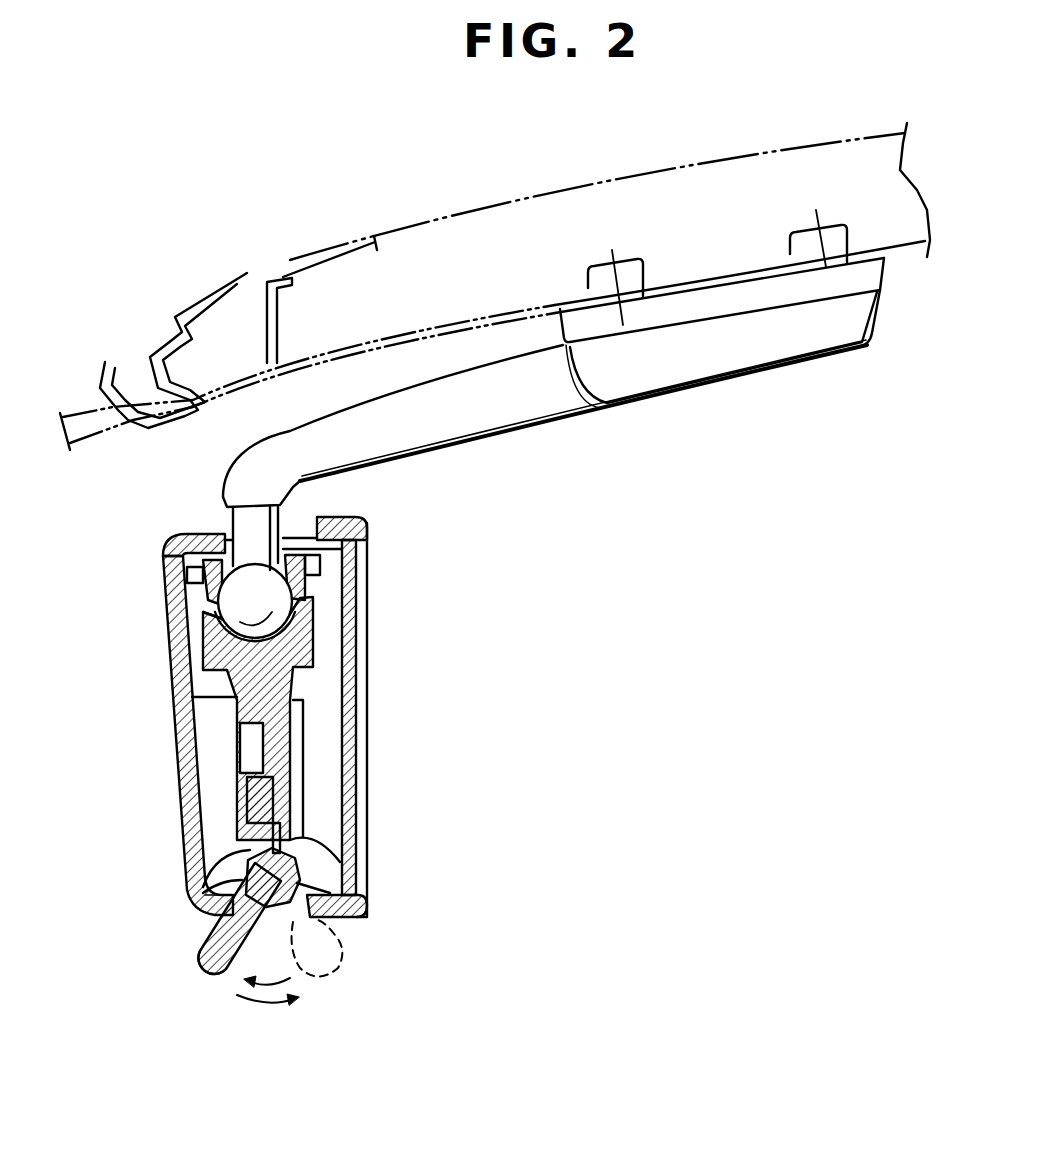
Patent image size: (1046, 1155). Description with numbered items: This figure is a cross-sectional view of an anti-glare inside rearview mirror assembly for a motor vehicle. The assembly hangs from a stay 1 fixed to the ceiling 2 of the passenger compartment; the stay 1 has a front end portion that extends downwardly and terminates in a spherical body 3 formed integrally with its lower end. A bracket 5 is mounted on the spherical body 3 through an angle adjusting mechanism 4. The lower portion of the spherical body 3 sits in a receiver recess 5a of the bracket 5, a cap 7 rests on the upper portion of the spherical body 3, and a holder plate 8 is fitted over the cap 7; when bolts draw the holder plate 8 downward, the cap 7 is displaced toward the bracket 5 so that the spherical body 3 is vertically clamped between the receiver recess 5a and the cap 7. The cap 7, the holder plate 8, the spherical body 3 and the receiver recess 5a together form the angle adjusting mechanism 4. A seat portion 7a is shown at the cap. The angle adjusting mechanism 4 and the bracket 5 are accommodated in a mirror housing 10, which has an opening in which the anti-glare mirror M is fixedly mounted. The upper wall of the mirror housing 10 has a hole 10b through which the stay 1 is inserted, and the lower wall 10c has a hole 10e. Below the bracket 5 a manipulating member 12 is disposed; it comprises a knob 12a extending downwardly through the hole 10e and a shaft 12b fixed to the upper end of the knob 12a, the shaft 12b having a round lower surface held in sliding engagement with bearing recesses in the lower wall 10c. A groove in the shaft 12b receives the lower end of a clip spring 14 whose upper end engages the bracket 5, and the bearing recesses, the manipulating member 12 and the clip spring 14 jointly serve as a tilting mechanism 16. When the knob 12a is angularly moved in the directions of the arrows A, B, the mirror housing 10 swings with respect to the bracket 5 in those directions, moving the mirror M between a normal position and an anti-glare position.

The stay 1 is at (495, 400).
The ceiling 2 is at (430, 328).
The spherical body 3 is at (245, 578).
The angle adjusting mechanism 4 is at (288, 587).
The bracket 5 is at (300, 668).
The receiver recess 5a is at (235, 637).
The cap 7 is at (372, 524).
The socket seat 7a is at (280, 595).
The holder plate 8 is at (165, 585).
The mirror housing 10 is at (178, 765).
The hole 10b is at (212, 530).
The lower wall 10c is at (205, 922).
The hole 10e is at (313, 925).
The manipulating member 12 is at (205, 893).
The knob 12a is at (207, 982).
The shaft 12b is at (183, 852).
The clip spring 14 is at (293, 837).
The tilting mechanism 16 is at (345, 978).
The anti-glare mirror M is at (360, 750).
The arrow A is at (267, 965).
The arrow B is at (268, 1015).